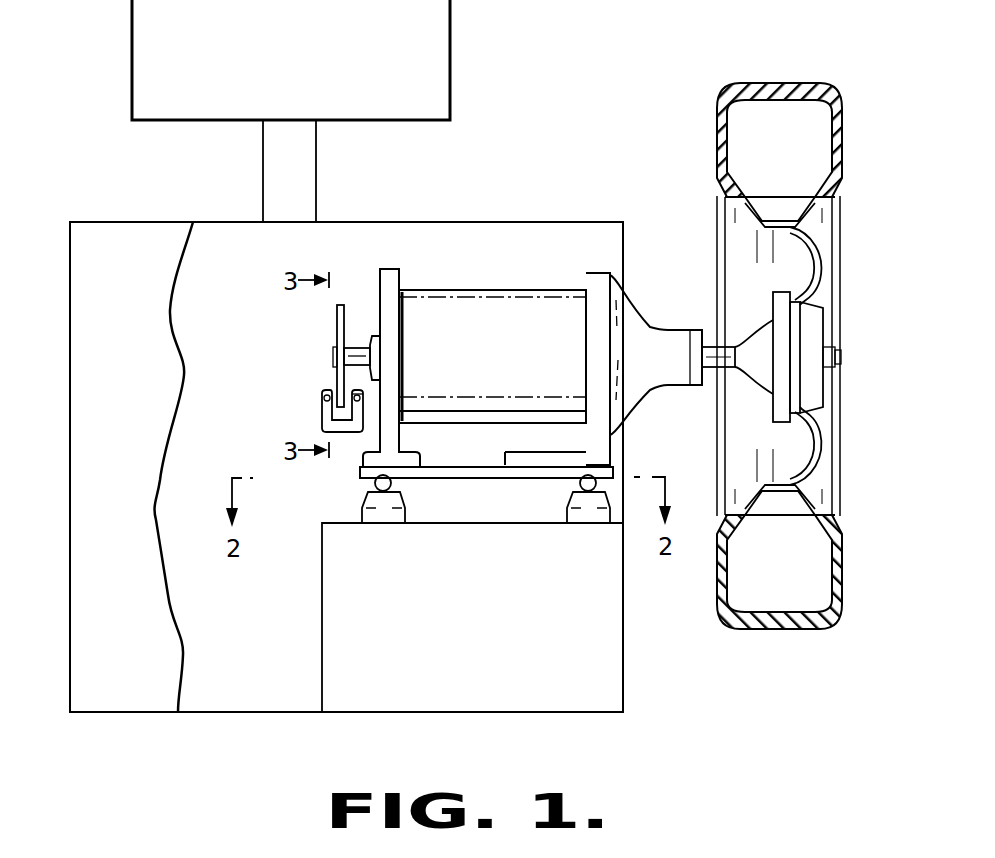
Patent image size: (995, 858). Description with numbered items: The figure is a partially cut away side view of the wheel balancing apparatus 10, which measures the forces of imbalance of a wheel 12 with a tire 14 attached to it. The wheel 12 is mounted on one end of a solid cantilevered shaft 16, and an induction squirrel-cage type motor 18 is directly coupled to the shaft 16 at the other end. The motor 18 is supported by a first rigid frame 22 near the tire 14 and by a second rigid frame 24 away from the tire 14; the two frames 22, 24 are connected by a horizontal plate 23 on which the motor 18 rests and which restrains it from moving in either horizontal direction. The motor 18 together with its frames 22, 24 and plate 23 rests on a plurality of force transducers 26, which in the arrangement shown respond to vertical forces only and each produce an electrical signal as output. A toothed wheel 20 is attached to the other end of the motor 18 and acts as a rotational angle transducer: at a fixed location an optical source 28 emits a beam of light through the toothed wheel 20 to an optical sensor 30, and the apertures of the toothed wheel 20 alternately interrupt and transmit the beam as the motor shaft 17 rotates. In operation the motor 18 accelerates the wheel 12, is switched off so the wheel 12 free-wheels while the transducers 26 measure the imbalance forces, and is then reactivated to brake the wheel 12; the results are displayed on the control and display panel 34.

The apparatus 10 is at (90, 150).
The wheel 12 is at (822, 258).
The tire 14 is at (843, 142).
The solid cantilevered shaft 16 is at (843, 352).
The motor shaft 17 is at (362, 352).
The induction squirrel-cage type motor 18 is at (517, 297).
The toothed wheel 20 is at (337, 322).
The first rigid frame 22 is at (603, 274).
The horizontal plate 23 is at (455, 440).
The second rigid frame 24 is at (398, 270).
The force transducers 26 is at (390, 515).
The optical source 28 is at (322, 398).
The optical sensor 30 is at (362, 397).
The control and display panel 34 is at (452, 77).